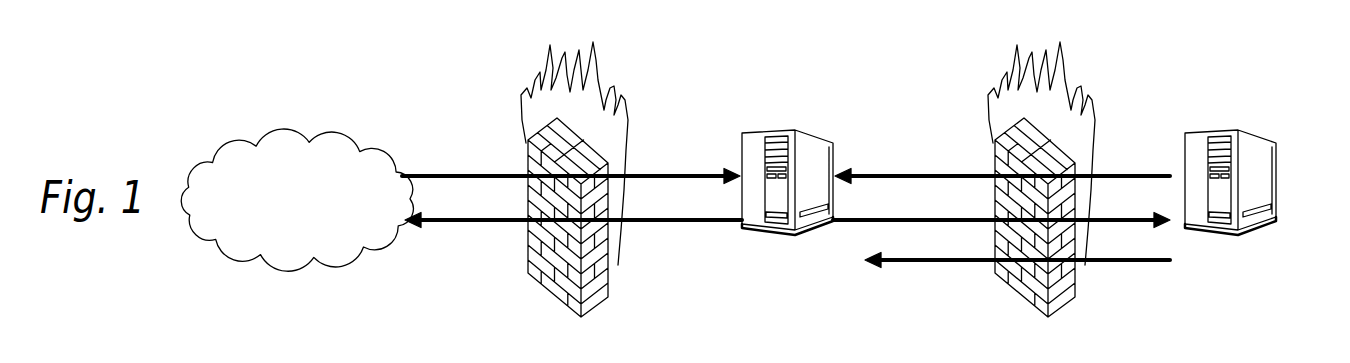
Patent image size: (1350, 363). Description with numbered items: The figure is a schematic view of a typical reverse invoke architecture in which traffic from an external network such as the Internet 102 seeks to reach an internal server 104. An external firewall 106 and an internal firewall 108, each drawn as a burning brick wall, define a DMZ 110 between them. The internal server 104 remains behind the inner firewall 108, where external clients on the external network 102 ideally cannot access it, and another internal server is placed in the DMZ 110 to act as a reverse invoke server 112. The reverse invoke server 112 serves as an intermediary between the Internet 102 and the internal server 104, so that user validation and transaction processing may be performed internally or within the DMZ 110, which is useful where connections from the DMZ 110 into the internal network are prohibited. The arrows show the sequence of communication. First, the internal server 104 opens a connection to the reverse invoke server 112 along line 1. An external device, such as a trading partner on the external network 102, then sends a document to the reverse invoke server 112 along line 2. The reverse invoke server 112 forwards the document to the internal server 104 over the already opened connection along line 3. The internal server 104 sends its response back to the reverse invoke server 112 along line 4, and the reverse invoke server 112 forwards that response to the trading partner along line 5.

The external network 102 is at (313, 137).
The internal server 104 is at (1246, 147).
The external firewall 106 is at (530, 276).
The internal firewall 108 is at (1010, 280).
The DMZ 110 is at (868, 88).
The reverse invoke server 112 is at (752, 132).
The line 1 is at (1002, 162).
The line 2 is at (571, 162).
The line 3 is at (1001, 205).
The line 4 is at (1017, 248).
The line 5 is at (573, 211).